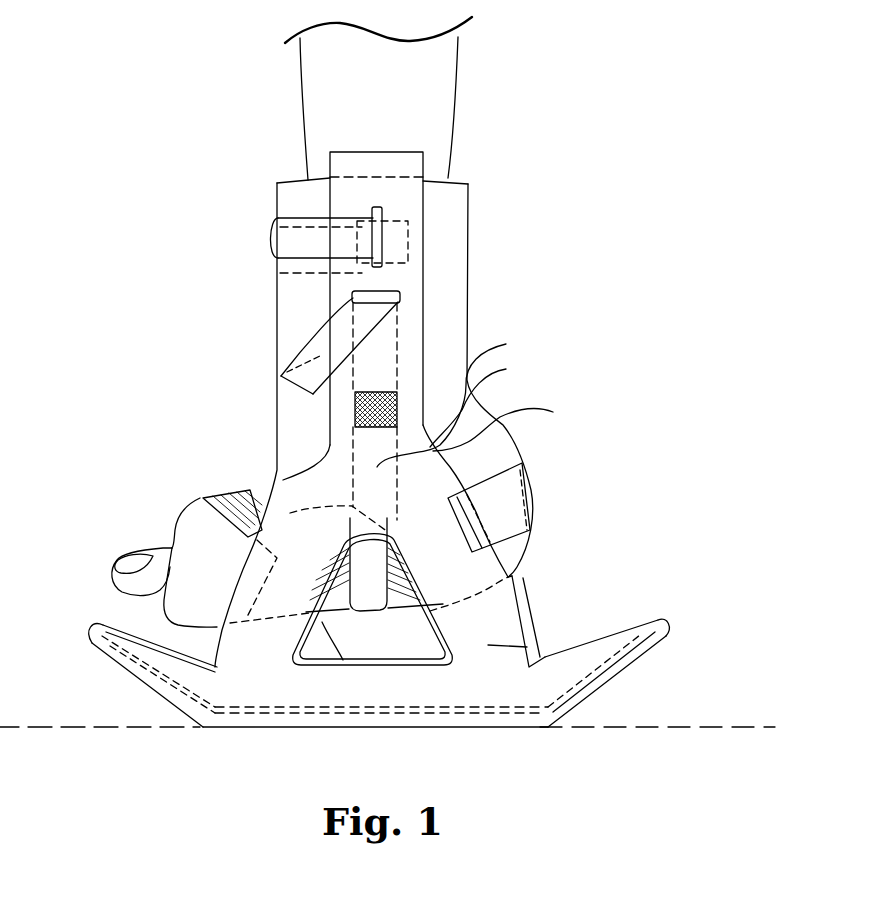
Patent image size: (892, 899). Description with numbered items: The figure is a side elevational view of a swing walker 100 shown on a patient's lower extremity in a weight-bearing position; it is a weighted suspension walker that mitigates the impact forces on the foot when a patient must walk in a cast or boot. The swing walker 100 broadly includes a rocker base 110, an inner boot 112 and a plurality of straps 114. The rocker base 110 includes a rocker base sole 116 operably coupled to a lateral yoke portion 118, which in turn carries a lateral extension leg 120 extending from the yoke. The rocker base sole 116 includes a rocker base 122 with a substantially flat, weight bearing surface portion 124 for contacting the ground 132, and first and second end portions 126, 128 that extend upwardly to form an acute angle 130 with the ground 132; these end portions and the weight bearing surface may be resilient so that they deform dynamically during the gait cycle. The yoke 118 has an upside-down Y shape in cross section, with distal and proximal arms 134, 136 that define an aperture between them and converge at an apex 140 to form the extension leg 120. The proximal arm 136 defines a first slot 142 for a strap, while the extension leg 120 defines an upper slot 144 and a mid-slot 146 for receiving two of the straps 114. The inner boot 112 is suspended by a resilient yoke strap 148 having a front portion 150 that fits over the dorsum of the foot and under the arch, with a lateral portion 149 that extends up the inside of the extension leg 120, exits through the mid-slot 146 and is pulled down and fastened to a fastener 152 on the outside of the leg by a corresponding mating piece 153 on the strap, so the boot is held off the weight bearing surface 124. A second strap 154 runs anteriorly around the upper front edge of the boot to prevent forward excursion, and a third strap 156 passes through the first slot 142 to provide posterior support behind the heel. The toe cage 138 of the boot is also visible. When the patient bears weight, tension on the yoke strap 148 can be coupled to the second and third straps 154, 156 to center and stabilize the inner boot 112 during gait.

The swing walker 100 is at (626, 240).
The rocker base 110 is at (563, 550).
The boot 112 is at (452, 430).
The straps 114 is at (290, 238).
The rocker base sole 116 is at (463, 746).
The lateral yoke portion 118 is at (508, 604).
The lateral extension leg 120 is at (400, 275).
The rocker base 122 is at (335, 702).
The weight bearing surface portion 124 is at (431, 727).
The first end portion 126 is at (131, 693).
The second end portion 128 is at (612, 682).
The acute angle 130 is at (141, 686).
The ground 132 is at (30, 725).
The distal arm 134 is at (213, 643).
The proximal arm 136 is at (545, 645).
The toe cage 138 is at (398, 646).
The apex 140 is at (480, 399).
The first slot 142 is at (512, 578).
The upper slot 144 is at (385, 210).
The mid-slot 146 is at (388, 292).
The resilient yoke strap 148 is at (397, 352).
The lateral portion 149 is at (483, 401).
The front portion 150 is at (285, 517).
The fastener 152 is at (354, 410).
The mating piece 153 is at (292, 360).
The second strap 154 is at (304, 242).
The third strap 156 is at (517, 510).